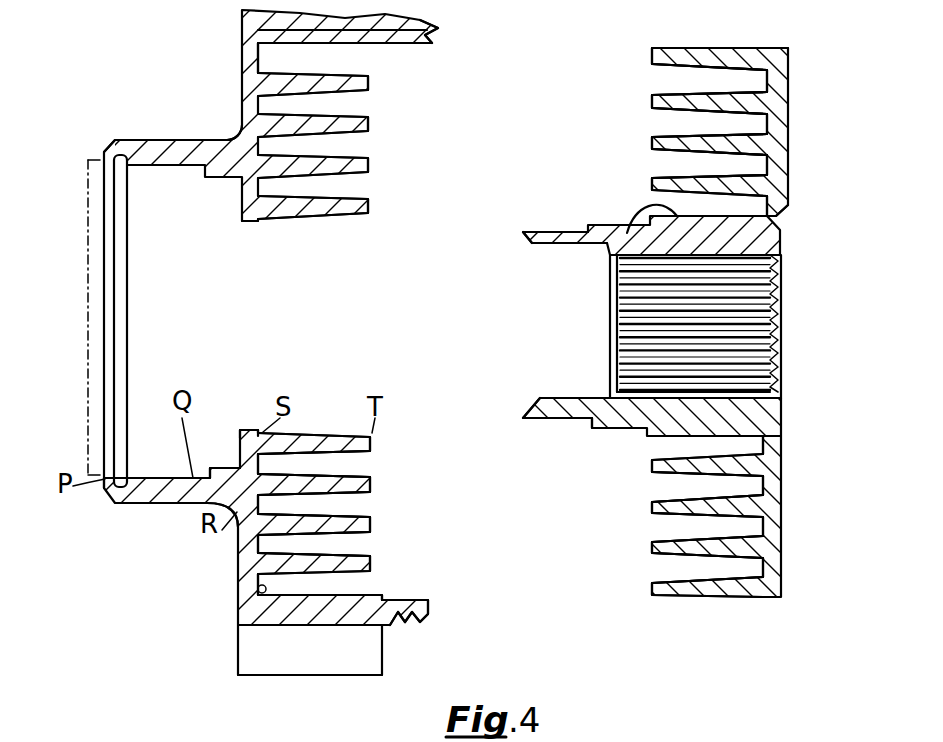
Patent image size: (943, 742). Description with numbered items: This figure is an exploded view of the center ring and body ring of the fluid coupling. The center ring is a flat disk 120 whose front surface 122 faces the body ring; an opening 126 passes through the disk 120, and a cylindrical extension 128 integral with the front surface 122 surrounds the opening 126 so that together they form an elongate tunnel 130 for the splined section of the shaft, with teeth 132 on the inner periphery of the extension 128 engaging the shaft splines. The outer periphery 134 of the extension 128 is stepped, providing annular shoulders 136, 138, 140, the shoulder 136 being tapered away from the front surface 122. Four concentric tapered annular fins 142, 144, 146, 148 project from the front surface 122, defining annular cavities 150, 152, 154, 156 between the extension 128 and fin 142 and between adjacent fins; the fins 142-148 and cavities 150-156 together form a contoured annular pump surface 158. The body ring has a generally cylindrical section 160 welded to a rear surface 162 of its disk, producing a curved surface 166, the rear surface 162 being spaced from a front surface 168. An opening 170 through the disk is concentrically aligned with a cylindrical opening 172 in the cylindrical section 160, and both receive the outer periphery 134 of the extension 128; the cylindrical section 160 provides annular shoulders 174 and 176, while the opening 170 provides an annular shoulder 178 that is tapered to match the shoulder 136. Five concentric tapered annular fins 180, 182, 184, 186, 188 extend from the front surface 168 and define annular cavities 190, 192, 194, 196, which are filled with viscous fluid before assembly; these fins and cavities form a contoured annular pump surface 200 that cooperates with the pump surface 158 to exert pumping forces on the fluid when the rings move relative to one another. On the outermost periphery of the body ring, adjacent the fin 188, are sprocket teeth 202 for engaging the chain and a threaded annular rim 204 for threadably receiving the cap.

The flat disk 120 is at (789, 142).
The front surface 122 is at (770, 56).
The opening 126 is at (787, 258).
The cylindrical extension 128 is at (773, 238).
The elongate tunnel 130 is at (528, 248).
The teeth 132 is at (730, 382).
The outer periphery 134 is at (740, 212).
The annular shoulder 136 is at (610, 258).
The annular shoulder 138 is at (633, 223).
The annular shoulder 140 is at (546, 232).
The annular fin 142 is at (652, 184).
The annular fin 144 is at (652, 145).
The annular fin 146 is at (652, 103).
The annular fin 148 is at (652, 54).
The annular cavity 150 is at (753, 203).
The annular cavity 152 is at (752, 164).
The annular cavity 154 is at (752, 123).
The annular cavity 156 is at (753, 81).
The contoured annular pump surface 158 is at (560, 40).
The cylindrical section 160 is at (107, 58).
The rear surface 162 is at (243, 70).
The curved surface 166 is at (238, 129).
The front surface 168 is at (262, 58).
The opening 170 is at (297, 222).
The cylindrical opening 172 is at (88, 318).
The annular shoulder 174 is at (143, 478).
The annular shoulder 176 is at (220, 468).
The annular shoulder 178 is at (250, 428).
The annular fin 180 is at (370, 208).
The annular fin 182 is at (370, 166).
The annular fin 184 is at (370, 125).
The annular fin 186 is at (370, 83).
The annular fin 188 is at (427, 43).
The annular cavity 190 is at (345, 463).
The annular cavity 192 is at (345, 501).
The annular cavity 194 is at (357, 545).
The annular cavity 196 is at (318, 583).
The contoured annular pump surface 200 is at (445, 437).
The sprocket teeth 202 is at (343, 675).
The threaded annular rim 204 is at (423, 32).